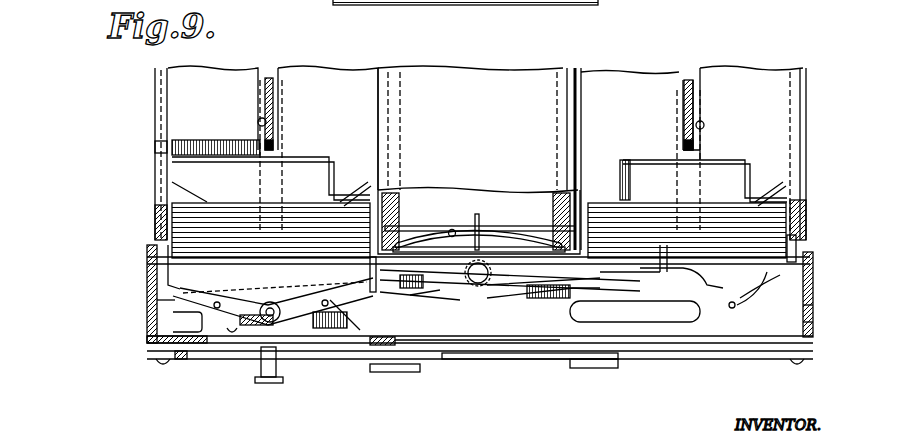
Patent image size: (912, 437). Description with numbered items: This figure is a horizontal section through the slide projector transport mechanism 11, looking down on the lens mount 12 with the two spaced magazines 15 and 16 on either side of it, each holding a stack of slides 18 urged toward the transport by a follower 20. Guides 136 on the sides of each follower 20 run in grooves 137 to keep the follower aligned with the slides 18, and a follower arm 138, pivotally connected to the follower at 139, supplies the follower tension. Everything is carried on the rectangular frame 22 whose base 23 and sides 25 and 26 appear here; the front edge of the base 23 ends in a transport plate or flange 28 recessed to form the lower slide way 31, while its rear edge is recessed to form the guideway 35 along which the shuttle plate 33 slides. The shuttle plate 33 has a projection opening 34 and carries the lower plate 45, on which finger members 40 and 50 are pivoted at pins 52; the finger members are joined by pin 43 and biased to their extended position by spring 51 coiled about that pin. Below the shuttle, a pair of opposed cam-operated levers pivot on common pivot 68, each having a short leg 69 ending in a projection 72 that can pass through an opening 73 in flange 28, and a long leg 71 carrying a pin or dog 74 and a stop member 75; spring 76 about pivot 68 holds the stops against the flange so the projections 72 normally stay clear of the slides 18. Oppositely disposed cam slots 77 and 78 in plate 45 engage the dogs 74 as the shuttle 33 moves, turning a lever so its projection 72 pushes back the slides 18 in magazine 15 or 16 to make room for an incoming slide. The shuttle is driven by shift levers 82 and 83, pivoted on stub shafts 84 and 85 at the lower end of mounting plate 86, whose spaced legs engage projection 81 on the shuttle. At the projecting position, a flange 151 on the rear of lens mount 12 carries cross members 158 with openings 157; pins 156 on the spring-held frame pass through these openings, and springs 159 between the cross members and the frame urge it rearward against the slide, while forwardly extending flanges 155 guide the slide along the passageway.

The transport mechanism 11 is at (142, 367).
The lens mount 12 is at (472, 128).
The magazine 15 is at (735, 90).
The magazine 16 is at (318, 90).
The slides 18 is at (172, 215).
The follower 20 is at (306, 163).
The frame 22 is at (811, 297).
The base or bottom 23 is at (798, 308).
The side 25 is at (810, 322).
The side 26 is at (148, 304).
The transport plate or flange 28 is at (800, 259).
The way 31 is at (762, 250).
The shuttle plate 33 is at (160, 336).
The opening 34 is at (190, 343).
The guideway 35 is at (417, 342).
The finger member 40 is at (150, 290).
The pin 43 is at (264, 300).
The plate 45 is at (253, 330).
The finger member 50 is at (384, 298).
The spring 51 is at (317, 313).
The pivot pins 52 is at (216, 308).
The common pivot 68 is at (485, 293).
The short leg 69 is at (567, 300).
The long leg 71 is at (265, 296).
The projection 72 is at (623, 280).
The opening 73 is at (667, 268).
The pin or dog 74 is at (240, 330).
The stop member 75 is at (760, 255).
The spring 76 is at (437, 297).
The cam slot 77 is at (190, 313).
The cam slot 78 is at (343, 320).
The projection 81 is at (272, 373).
The shift lever 82 is at (495, 358).
The shift lever 83 is at (402, 373).
The stub shaft 84 is at (597, 368).
The stub shaft 85 is at (375, 380).
The mounting plate 86 is at (483, 5).
The guides 136 is at (162, 132).
The grooves 137 is at (162, 100).
The follower arms 138 is at (267, 85).
The pivotal connection 139 is at (258, 120).
The flange 151 is at (395, 192).
The flanges 155 is at (553, 240).
The pin 156 is at (483, 224).
The openings 157 is at (485, 228).
The cross members 158 is at (450, 224).
The springs 159 is at (456, 231).